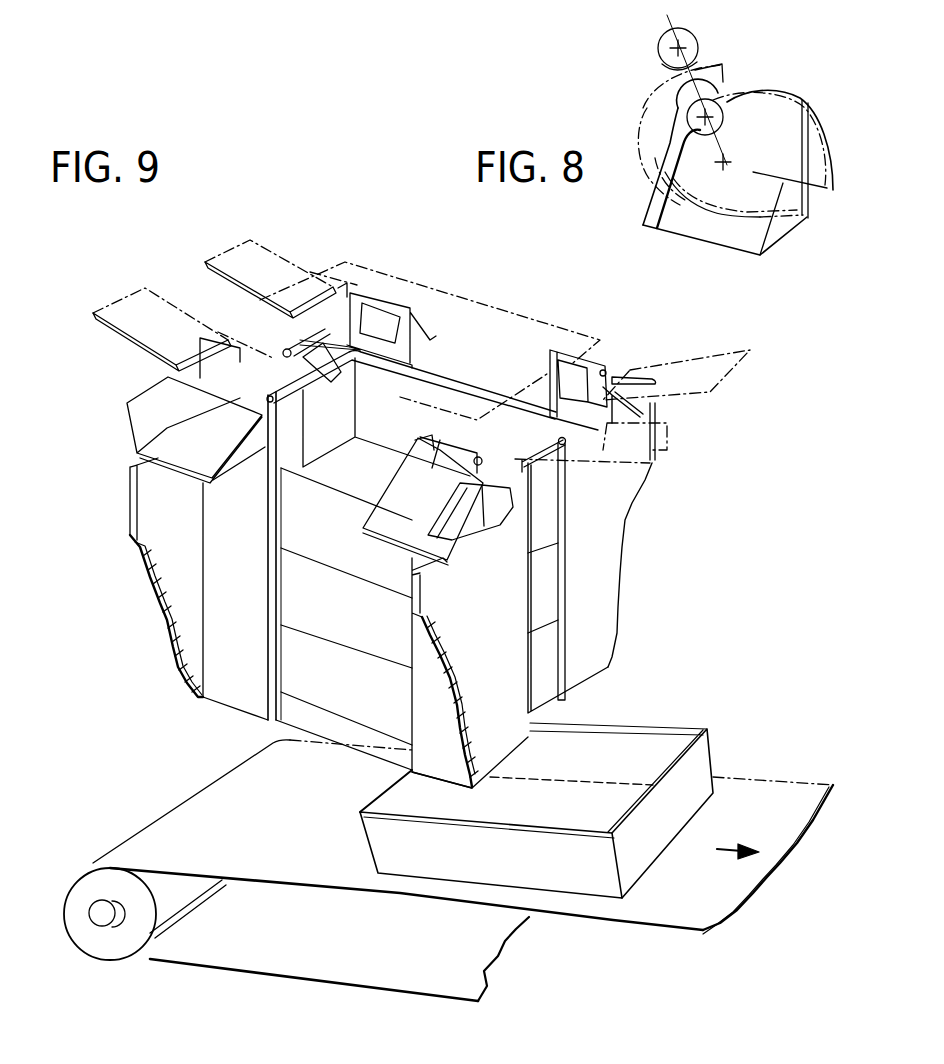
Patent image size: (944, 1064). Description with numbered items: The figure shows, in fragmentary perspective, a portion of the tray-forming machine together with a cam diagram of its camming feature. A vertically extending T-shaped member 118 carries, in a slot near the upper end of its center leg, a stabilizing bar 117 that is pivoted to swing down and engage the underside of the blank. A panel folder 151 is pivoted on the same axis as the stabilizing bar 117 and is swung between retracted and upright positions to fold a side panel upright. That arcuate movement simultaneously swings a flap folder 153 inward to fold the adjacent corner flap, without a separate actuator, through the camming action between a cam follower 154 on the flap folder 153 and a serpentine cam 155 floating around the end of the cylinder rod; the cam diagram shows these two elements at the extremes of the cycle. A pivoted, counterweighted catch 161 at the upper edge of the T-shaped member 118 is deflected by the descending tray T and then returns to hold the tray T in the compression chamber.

In FIG. 9, the stabilizing bar 117 is at (373, 331).
In FIG. 9, the T-shaped member 118 is at (160, 537).
In FIG. 9, the panel folder 151 is at (147, 458).
In FIG. 9, the flap folder 153 is at (151, 404).
In FIG. 8, the cam follower 154 is at (710, 104).
In FIG. 8, the serpentine cam 155 is at (650, 110).
In FIG. 9, the catch 161 is at (515, 512).
In FIG. 9, the tray-type container T is at (703, 772).